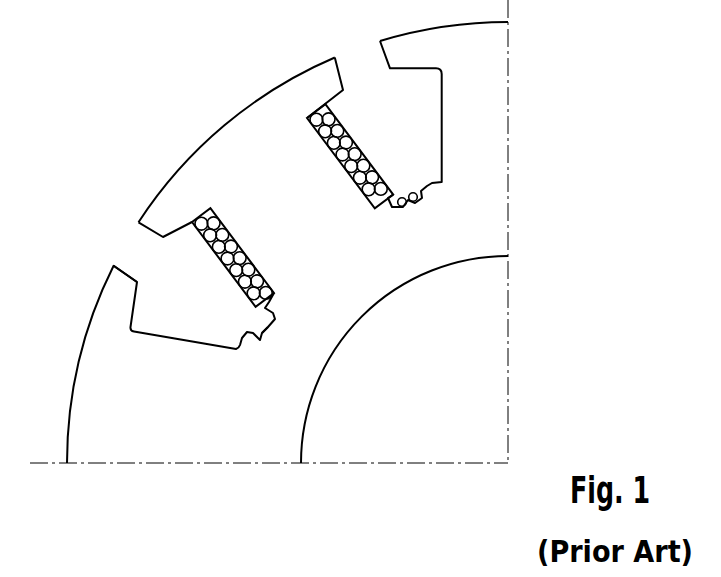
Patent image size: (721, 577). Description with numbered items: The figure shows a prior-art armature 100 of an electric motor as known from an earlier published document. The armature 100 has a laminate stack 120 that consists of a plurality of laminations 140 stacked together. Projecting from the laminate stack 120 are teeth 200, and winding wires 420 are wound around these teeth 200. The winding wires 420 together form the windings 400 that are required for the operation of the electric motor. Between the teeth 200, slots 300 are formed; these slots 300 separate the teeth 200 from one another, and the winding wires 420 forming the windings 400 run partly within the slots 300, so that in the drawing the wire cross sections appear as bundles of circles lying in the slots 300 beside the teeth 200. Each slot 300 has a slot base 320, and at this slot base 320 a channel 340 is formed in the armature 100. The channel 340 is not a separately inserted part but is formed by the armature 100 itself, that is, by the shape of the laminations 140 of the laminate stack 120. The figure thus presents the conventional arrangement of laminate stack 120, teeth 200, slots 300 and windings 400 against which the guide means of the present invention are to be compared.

The armature 100 is at (117, 133).
The laminate stack 120 is at (200, 151).
The laminations 140 is at (128, 194).
The teeth 200 is at (245, 125).
The slots 300 is at (417, 132).
The slot base 320 is at (413, 183).
The channel 340 is at (268, 322).
The windings 400 is at (327, 152).
The winding wires 420 is at (343, 163).